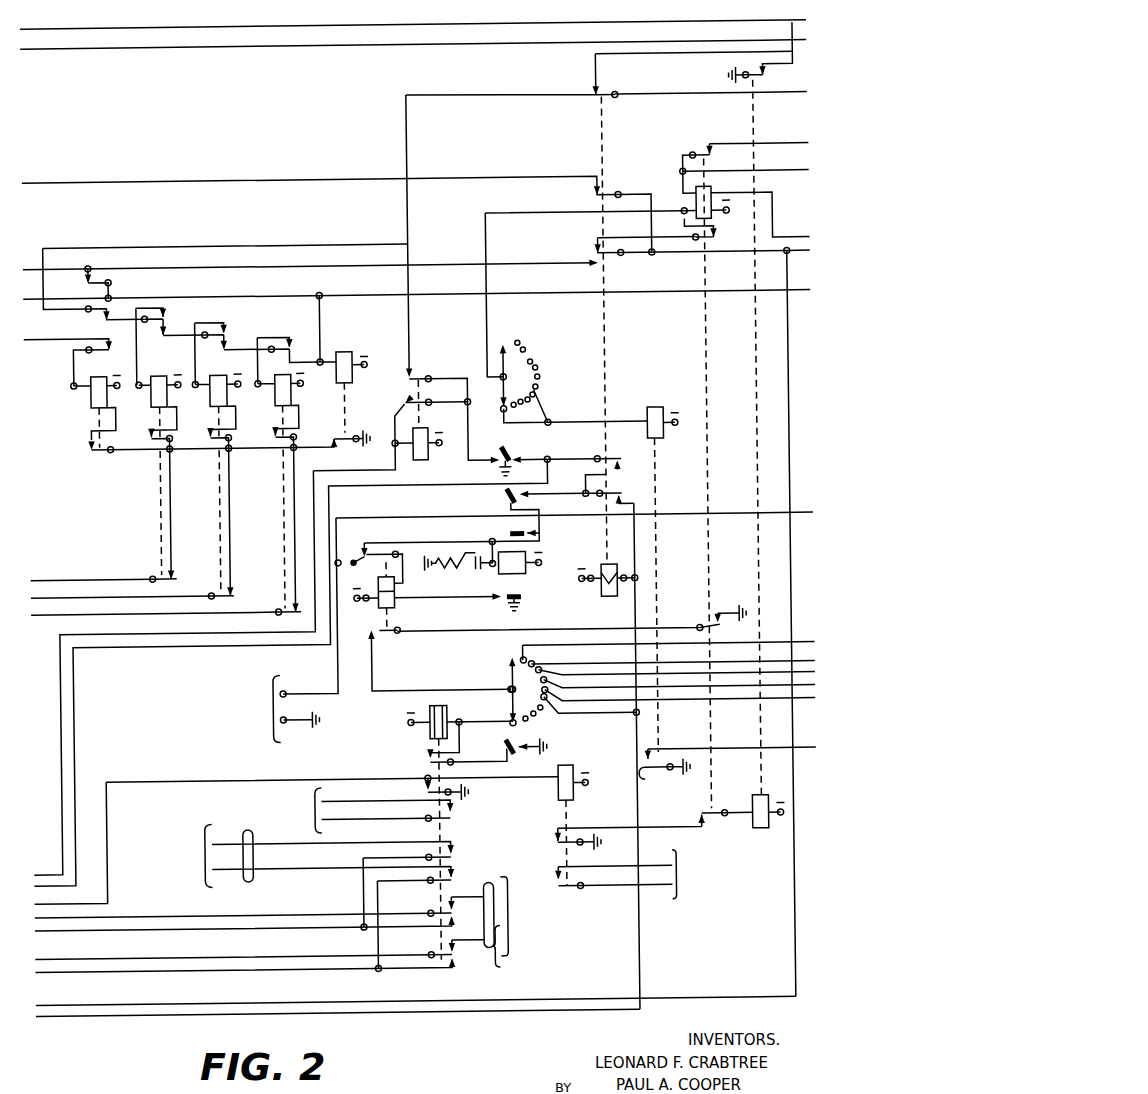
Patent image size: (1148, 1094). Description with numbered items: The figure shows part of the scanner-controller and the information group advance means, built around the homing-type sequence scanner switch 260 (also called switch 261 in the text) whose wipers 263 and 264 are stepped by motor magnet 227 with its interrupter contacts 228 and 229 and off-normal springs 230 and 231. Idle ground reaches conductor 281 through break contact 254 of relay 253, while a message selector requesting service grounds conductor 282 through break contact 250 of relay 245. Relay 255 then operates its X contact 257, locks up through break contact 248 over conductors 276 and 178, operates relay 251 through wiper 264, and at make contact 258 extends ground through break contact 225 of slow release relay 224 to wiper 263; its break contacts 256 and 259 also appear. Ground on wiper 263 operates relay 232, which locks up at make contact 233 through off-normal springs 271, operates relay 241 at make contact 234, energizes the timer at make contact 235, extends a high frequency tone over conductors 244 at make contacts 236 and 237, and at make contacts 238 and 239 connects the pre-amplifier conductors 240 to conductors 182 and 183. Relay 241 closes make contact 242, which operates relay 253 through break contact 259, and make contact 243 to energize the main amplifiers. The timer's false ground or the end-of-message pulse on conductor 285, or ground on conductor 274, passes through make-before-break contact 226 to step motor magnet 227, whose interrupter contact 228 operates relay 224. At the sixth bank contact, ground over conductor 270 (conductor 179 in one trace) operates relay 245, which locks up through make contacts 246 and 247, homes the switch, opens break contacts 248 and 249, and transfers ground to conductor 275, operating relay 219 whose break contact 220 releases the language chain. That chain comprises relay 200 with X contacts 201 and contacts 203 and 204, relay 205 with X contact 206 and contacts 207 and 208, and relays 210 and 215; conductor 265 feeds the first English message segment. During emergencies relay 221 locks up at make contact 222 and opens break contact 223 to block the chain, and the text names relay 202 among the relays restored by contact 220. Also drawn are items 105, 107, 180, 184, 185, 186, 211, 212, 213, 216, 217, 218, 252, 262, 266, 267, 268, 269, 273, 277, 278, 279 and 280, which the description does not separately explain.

The supply conductor 105 is at (784, 24).
The supply conductor 107 is at (749, 44).
The conductor 178 is at (134, 1000).
The conductor 179 is at (165, 1014).
The conductors 180 is at (267, 948).
The conductor 182 is at (108, 956).
The conductor 183 is at (104, 918).
The conductor 184 is at (46, 902).
The conductor 185 is at (103, 780).
The conductor 186 is at (58, 834).
The relay 200 is at (94, 404).
The X contacts 201 is at (80, 452).
The relay 202 is at (118, 358).
The make contact 203 is at (98, 320).
The break contact 204 is at (86, 275).
The relay 205 is at (154, 362).
The X contact 206 is at (144, 450).
The make contact 207 is at (156, 574).
The break-make contact 208 is at (178, 310).
The relay 210 is at (220, 362).
The relay contact 211 is at (204, 450).
The relay contact 212 is at (216, 590).
The relay contact 213 is at (230, 334).
The relay 215 is at (300, 392).
The relay contact 216 is at (266, 450).
The relay contact 217 is at (284, 606).
The relay contact 218 is at (294, 330).
The relay 219 is at (344, 353).
The break contact 220 is at (342, 443).
The relay 221 is at (422, 460).
The make contact 222 is at (406, 410).
The break contact 223 is at (408, 379).
The slow release relay 224 is at (394, 589).
The break contact 225 is at (380, 635).
The make-before-break contact 226 is at (356, 554).
The motor magnet 227 is at (514, 577).
The interrupter contact 228 is at (502, 604).
The interrupter contact 229 is at (524, 534).
The off-normal springs 230 is at (522, 500).
The off-normal springs 231 is at (523, 461).
The relay 232 is at (430, 712).
The make contact 233 is at (424, 766).
The make contact 234 is at (424, 792).
The make contact 235 is at (448, 808).
The make contact 236 is at (448, 848).
The make contact 237 is at (448, 870).
The make contact 238 is at (438, 912).
The make contact 239 is at (438, 954).
The pair of conductors 240 is at (484, 950).
The relay 241 is at (572, 768).
The make contact 242 is at (553, 844).
The make contact 243 is at (580, 886).
The conductors 244 is at (249, 880).
The relay 245 is at (602, 599).
The make contact 246 is at (636, 494).
The make contact 247 is at (632, 455).
The break-make contacts 248 is at (597, 250).
The break contact 249 is at (599, 196).
The break contact 250 is at (594, 96).
The relay 251 is at (648, 410).
The relay contact 252 is at (665, 770).
The relay 253 is at (760, 832).
The break contact 254 is at (768, 72).
The relay 255 is at (698, 200).
The break contact 256 is at (700, 158).
The X contact 257 is at (726, 244).
The make contact 258 is at (714, 630).
The break contact 259 is at (698, 826).
The sequence scanner switch 260 is at (523, 322).
The sequence scanner switch 261 is at (531, 691).
The contact bank 262 is at (522, 366).
The wiper 263 is at (508, 686).
The wiper 264 is at (504, 348).
The conductor 265 is at (520, 646).
The conductor 266 is at (588, 658).
The conductor 267 is at (590, 672).
The conductor 268 is at (706, 692).
The conductor 269 is at (760, 692).
The conductor 270 is at (632, 710).
The off-normal springs 271 is at (504, 746).
The conductor 273 is at (770, 752).
The conductor 274 is at (786, 518).
The conductor 275 is at (762, 295).
The conductor 276 is at (810, 254).
The conductor 277 is at (812, 215).
The conductor 278 is at (806, 170).
The conductor 279 is at (806, 144).
The conductor 280 is at (723, 98).
The conductor 281 is at (798, 42).
The conductor 282 is at (696, 55).
The conductor 285 is at (284, 698).